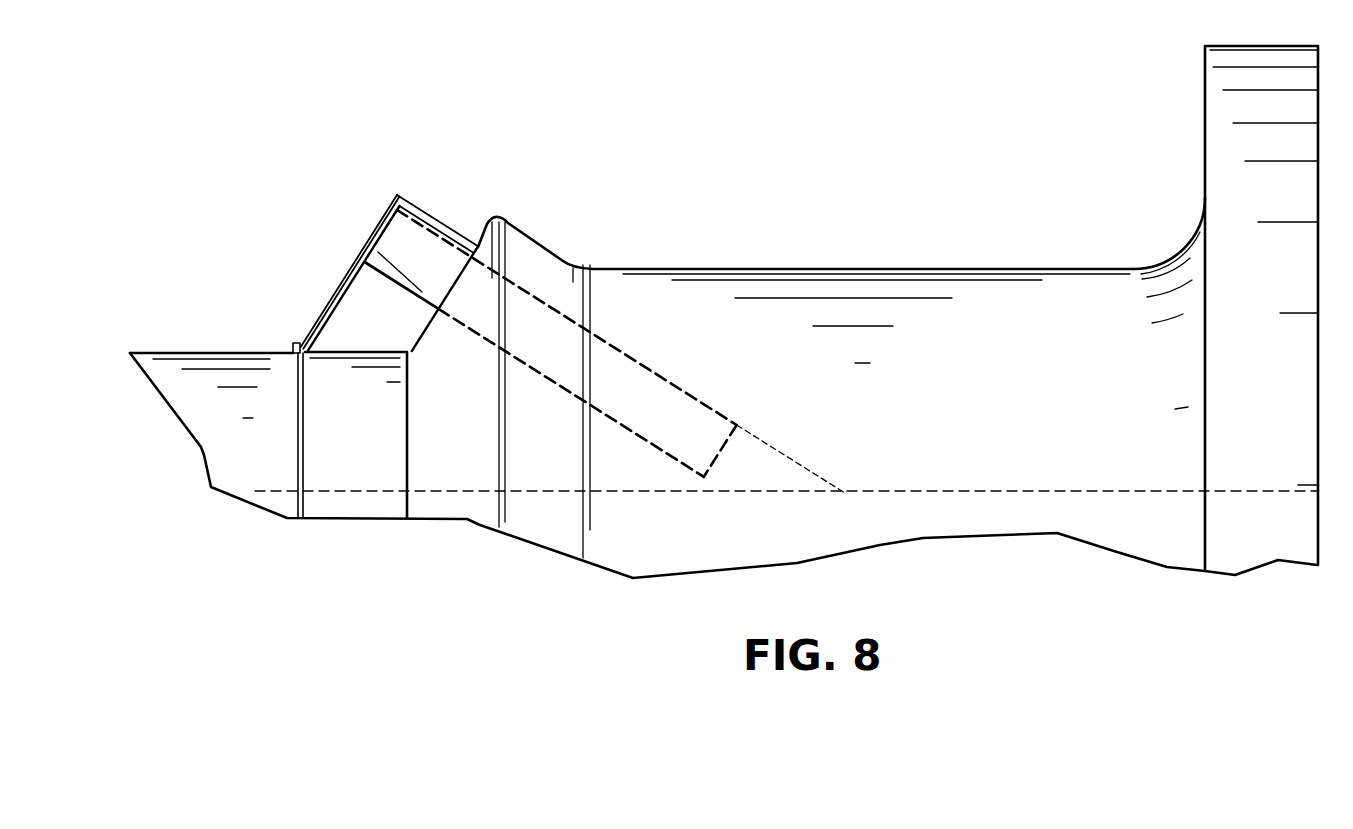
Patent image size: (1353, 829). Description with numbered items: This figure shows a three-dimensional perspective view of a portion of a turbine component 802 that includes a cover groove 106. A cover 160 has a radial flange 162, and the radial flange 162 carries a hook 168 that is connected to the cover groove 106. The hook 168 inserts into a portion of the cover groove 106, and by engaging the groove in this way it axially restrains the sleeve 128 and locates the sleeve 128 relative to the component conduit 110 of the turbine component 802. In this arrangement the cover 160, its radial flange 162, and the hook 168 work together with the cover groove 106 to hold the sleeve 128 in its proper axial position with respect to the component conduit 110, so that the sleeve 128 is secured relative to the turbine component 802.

The turbine component 802 is at (195, 199).
The cover 160 is at (418, 207).
The radial flange 162 is at (345, 281).
The hook 168 is at (293, 345).
The cover groove 106 is at (305, 455).
The sleeve 128 is at (405, 266).
The component conduit 110 is at (477, 337).